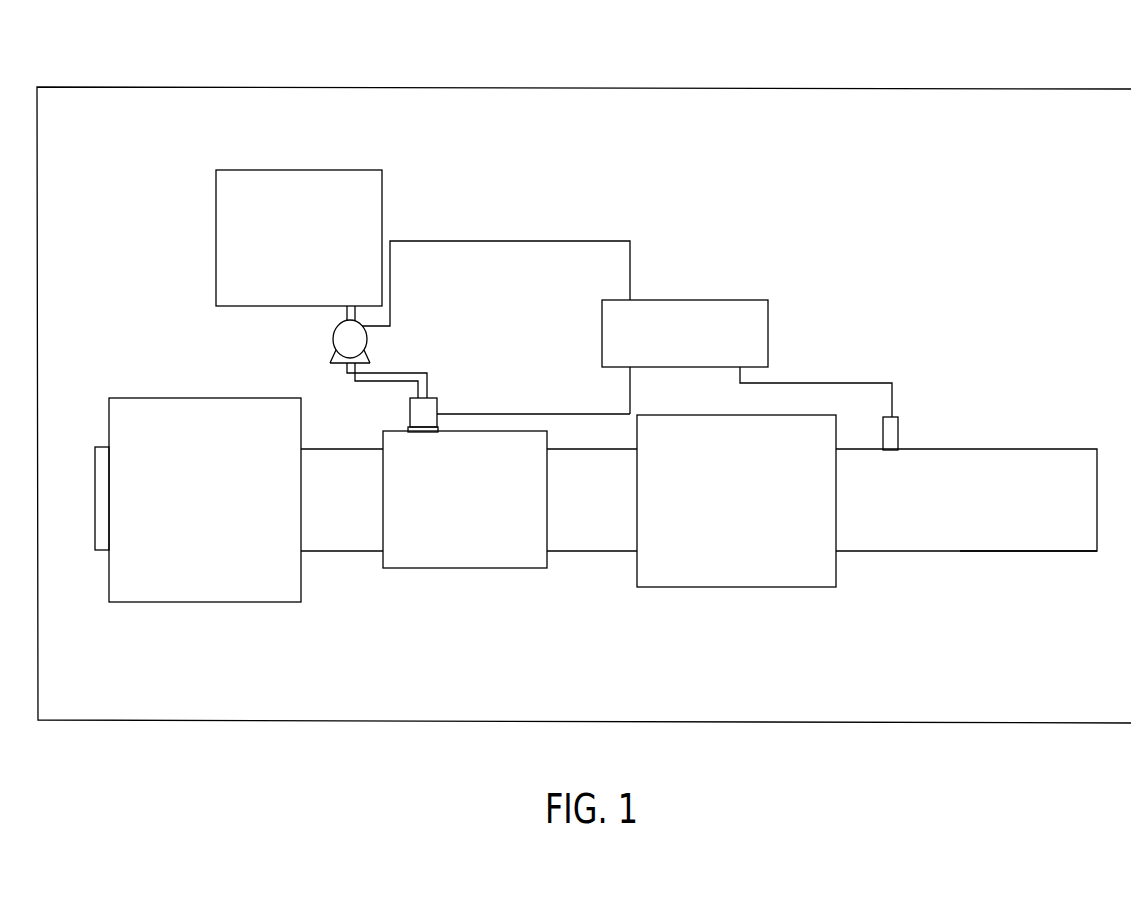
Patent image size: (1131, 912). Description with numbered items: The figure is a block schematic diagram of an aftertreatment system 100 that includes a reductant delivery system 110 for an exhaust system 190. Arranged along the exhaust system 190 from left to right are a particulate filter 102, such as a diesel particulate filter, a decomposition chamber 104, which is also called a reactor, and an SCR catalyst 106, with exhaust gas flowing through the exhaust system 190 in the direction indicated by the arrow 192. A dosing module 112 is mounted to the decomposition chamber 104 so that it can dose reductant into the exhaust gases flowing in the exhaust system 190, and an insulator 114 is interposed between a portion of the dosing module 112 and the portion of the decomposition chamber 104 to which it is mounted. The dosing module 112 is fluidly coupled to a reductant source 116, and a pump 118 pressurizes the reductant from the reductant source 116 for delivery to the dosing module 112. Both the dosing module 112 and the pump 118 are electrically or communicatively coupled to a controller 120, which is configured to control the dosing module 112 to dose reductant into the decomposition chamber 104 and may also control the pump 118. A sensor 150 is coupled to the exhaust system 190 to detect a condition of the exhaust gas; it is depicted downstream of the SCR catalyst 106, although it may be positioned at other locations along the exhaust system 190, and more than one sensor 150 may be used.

The aftertreatment system 100 is at (78, 78).
The particulate filter 102 is at (229, 602).
The decomposition chamber 104 is at (538, 430).
The SCR catalyst 106 is at (748, 587).
The reductant delivery system 110 is at (514, 340).
The dosing module 112 is at (438, 408).
The insulator 114 is at (410, 428).
The reductant source 116 is at (348, 170).
The pump 118 is at (333, 342).
The controller 120 is at (670, 298).
The sensor 150 is at (915, 425).
The exhaust system 190 is at (374, 644).
The web transport direction 192 is at (1032, 566).